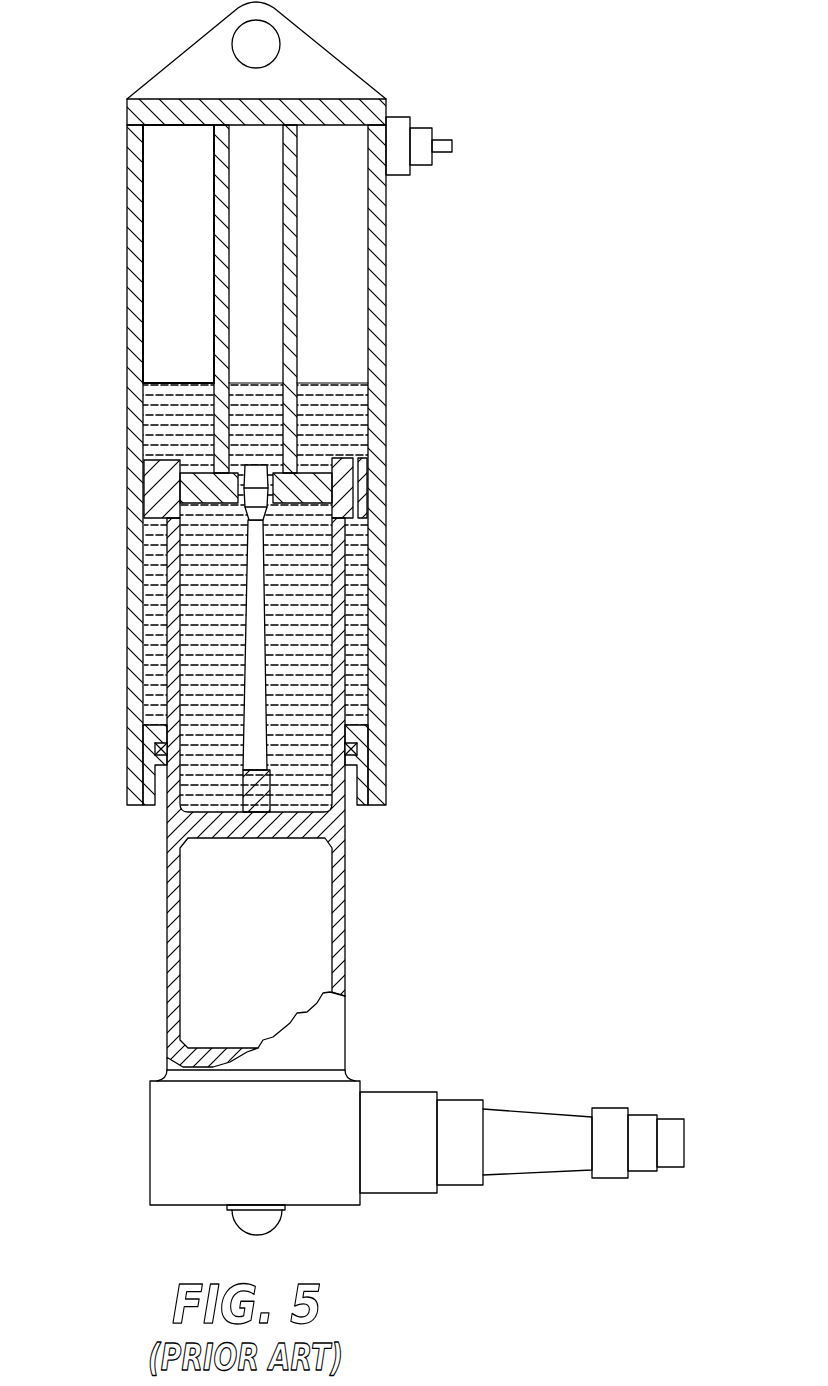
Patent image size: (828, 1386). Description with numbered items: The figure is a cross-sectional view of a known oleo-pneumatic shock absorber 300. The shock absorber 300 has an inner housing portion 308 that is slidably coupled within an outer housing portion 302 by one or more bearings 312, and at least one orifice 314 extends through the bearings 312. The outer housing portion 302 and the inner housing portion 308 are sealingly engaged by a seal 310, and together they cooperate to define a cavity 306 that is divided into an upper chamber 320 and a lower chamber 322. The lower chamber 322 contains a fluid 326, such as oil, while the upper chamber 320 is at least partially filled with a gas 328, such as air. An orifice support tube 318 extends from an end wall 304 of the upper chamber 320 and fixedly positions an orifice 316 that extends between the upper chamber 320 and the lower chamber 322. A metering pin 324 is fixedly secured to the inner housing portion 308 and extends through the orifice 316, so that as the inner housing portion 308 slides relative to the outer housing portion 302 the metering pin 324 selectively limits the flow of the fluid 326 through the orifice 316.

The shock absorber 300 is at (443, 51).
The outer housing portion 302 is at (385, 672).
The end wall 304 is at (317, 127).
The cavity 306 is at (184, 275).
The inner housing portion 308 is at (346, 900).
The seal 310 is at (355, 748).
The bearing 312 is at (340, 459).
The orifice 314 is at (360, 484).
The orifice 316 is at (242, 462).
The orifice support tube 318 is at (300, 258).
The upper chamber 320 is at (175, 325).
The lower chamber 322 is at (200, 668).
The metering pin 324 is at (266, 620).
The fluid 326 is at (201, 613).
The gas 328 is at (176, 155).